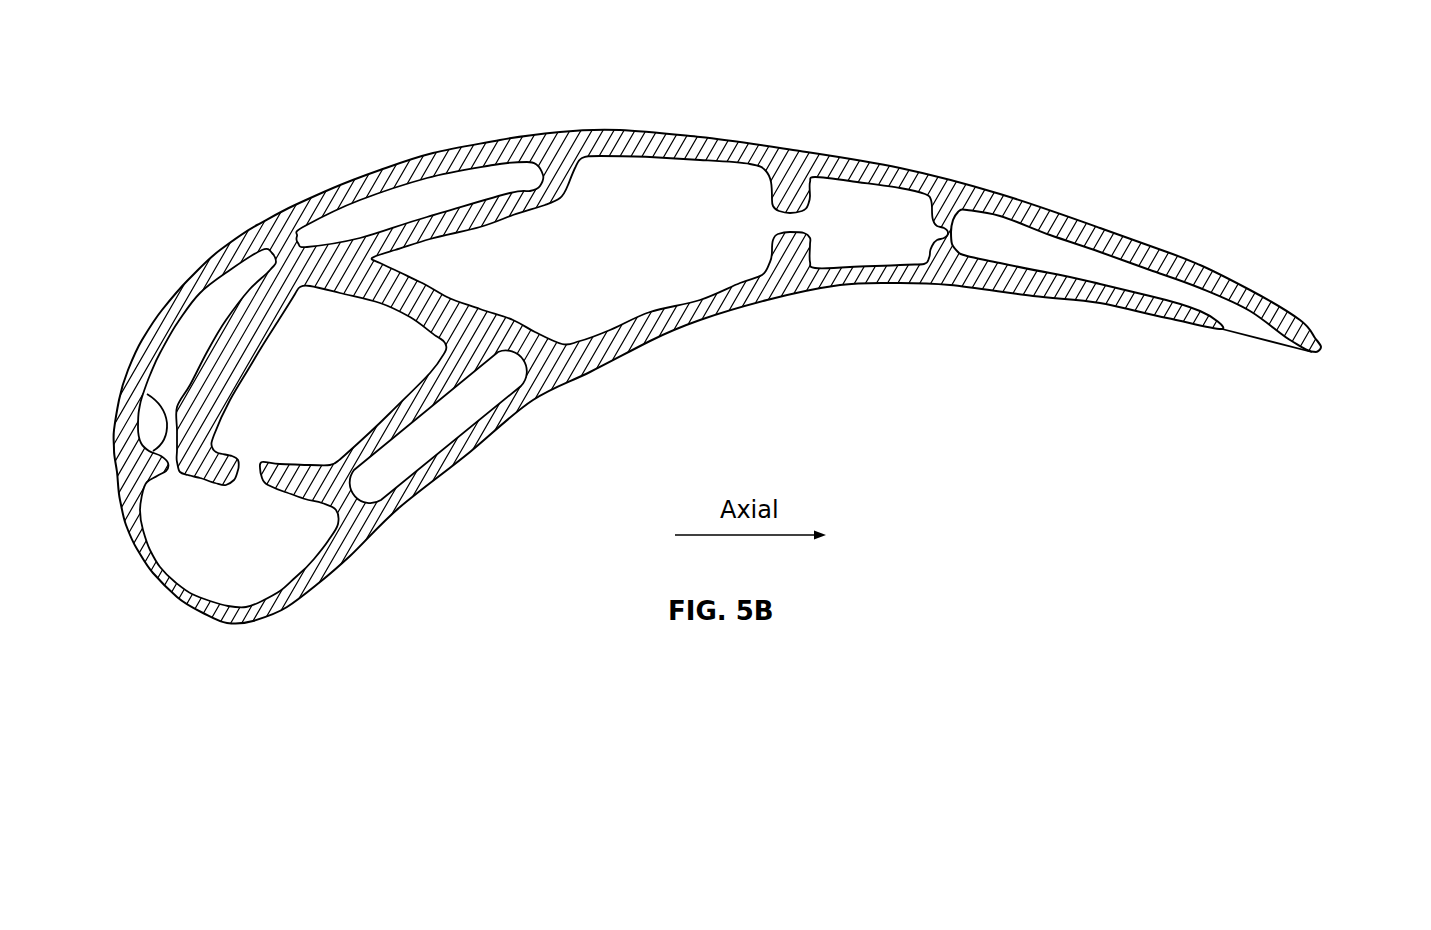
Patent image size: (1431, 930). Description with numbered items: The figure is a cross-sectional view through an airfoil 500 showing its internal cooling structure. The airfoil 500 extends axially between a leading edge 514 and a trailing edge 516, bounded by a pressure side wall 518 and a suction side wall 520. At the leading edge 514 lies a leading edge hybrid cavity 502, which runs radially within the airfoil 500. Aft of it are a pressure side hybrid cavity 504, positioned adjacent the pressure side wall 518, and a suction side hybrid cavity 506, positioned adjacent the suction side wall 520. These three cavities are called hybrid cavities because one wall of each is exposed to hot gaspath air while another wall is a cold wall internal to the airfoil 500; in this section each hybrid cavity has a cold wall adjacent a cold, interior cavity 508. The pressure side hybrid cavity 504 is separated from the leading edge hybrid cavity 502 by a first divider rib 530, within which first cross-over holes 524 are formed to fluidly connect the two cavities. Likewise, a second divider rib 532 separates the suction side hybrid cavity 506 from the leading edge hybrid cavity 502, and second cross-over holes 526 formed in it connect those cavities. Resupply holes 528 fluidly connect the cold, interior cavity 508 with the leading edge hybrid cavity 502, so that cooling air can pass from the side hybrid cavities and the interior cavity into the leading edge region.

The airfoil 500 is at (1106, 148).
The leading edge hybrid cavity 502 is at (236, 577).
The pressure side hybrid cavity 504 is at (425, 450).
The suction side hybrid cavity 506 is at (213, 305).
The cold, interior cavity 508 is at (364, 322).
The leading edge 514 is at (207, 614).
The trailing edge 516 is at (1324, 350).
The pressure side wall 518 is at (654, 353).
The suction side wall 520 is at (533, 124).
The first cross-over holes 524 is at (337, 512).
The second cross-over holes 526 is at (155, 460).
The resupply holes 528 is at (257, 463).
The first divider rib 530 is at (360, 494).
The second divider rib 532 is at (146, 406).